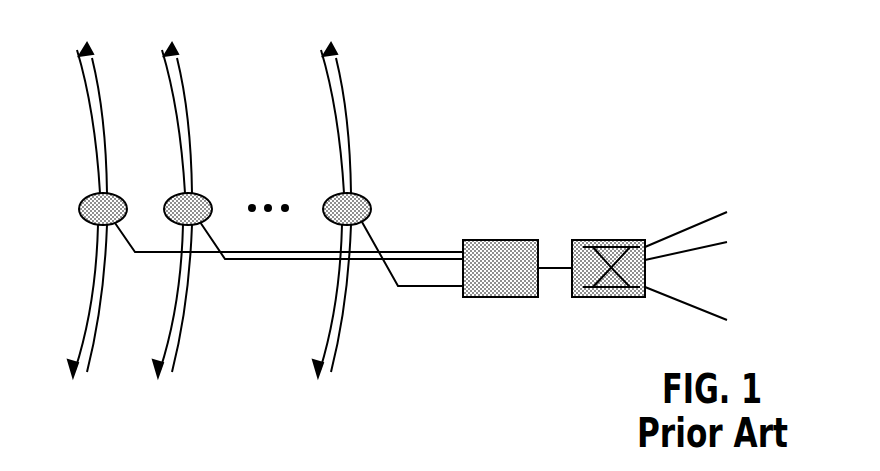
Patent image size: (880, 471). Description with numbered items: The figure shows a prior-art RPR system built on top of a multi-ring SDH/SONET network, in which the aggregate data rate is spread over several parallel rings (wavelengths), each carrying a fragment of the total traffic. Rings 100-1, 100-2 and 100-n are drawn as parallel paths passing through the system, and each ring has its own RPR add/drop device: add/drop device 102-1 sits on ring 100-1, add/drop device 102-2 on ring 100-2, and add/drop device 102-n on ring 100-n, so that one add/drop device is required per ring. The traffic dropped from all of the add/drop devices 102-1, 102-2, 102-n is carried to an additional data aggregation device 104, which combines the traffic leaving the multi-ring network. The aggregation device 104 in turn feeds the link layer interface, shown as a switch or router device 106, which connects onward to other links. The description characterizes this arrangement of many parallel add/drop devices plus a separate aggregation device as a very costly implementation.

The ring 100-1 is at (81, 195).
The ring 100-2 is at (170, 195).
The ring 100-n is at (323, 195).
The RPR add/drop device 102-1 is at (80, 205).
The RPR add/drop device 102-2 is at (165, 205).
The RPR add/drop device 102-n is at (324, 205).
The data aggregation device 104 is at (518, 240).
The switch or router device 106 is at (622, 240).